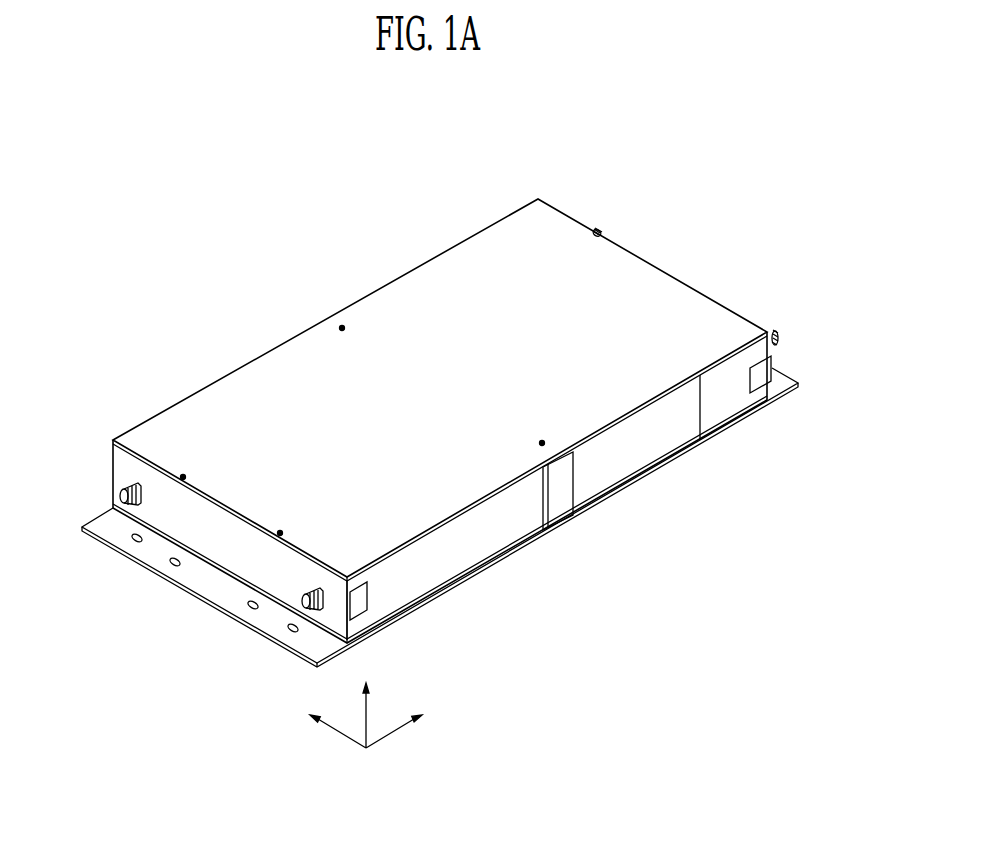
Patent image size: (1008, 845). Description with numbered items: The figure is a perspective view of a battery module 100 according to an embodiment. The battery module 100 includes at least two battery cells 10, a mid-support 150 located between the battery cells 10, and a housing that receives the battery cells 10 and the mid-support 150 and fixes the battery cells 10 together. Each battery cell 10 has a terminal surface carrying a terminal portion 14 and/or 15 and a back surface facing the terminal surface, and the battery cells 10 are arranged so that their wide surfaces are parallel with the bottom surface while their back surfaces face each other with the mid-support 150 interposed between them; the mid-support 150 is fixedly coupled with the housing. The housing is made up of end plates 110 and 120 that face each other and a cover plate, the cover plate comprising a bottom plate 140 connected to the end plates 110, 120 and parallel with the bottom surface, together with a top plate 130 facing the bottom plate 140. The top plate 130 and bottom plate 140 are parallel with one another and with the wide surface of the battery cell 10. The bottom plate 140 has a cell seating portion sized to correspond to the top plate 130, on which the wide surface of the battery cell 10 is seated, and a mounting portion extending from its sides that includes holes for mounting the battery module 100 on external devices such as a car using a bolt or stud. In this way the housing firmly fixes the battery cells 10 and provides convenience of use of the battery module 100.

The battery module 100 is at (726, 187).
The top plate 130 is at (462, 277).
The end plate 110 is at (160, 550).
The bottom plate 140 is at (229, 625).
The battery cell 10 is at (680, 455).
The mid-support 150 is at (567, 524).
The end plate 120 is at (790, 358).
The terminal portion 14 is at (123, 496).
The terminal portion 15 is at (306, 601).